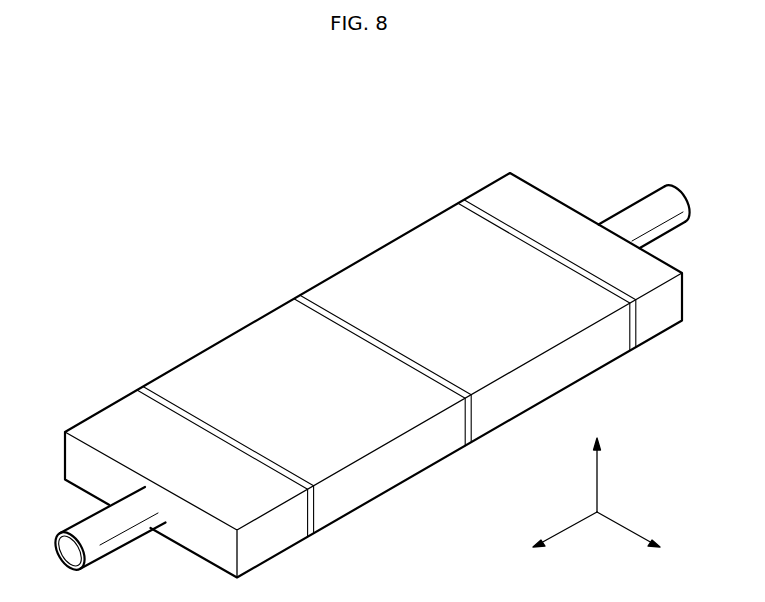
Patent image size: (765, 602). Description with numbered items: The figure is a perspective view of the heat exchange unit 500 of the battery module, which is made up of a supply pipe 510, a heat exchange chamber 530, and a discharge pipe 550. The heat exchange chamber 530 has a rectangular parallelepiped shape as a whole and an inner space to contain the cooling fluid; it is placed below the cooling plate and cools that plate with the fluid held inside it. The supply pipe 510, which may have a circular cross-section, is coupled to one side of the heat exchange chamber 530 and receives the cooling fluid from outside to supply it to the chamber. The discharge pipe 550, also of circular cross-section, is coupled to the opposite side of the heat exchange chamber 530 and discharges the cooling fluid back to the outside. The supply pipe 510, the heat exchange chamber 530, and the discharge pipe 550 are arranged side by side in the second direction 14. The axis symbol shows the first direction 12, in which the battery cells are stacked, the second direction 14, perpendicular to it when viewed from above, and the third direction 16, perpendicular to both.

The heat exchange unit 500 is at (180, 150).
The heat exchange chamber 530 is at (278, 327).
The supply pipe 510 is at (78, 530).
The discharge pipe 550 is at (633, 223).
The first direction 12 is at (641, 540).
The second direction 14 is at (552, 540).
The third direction 16 is at (598, 461).